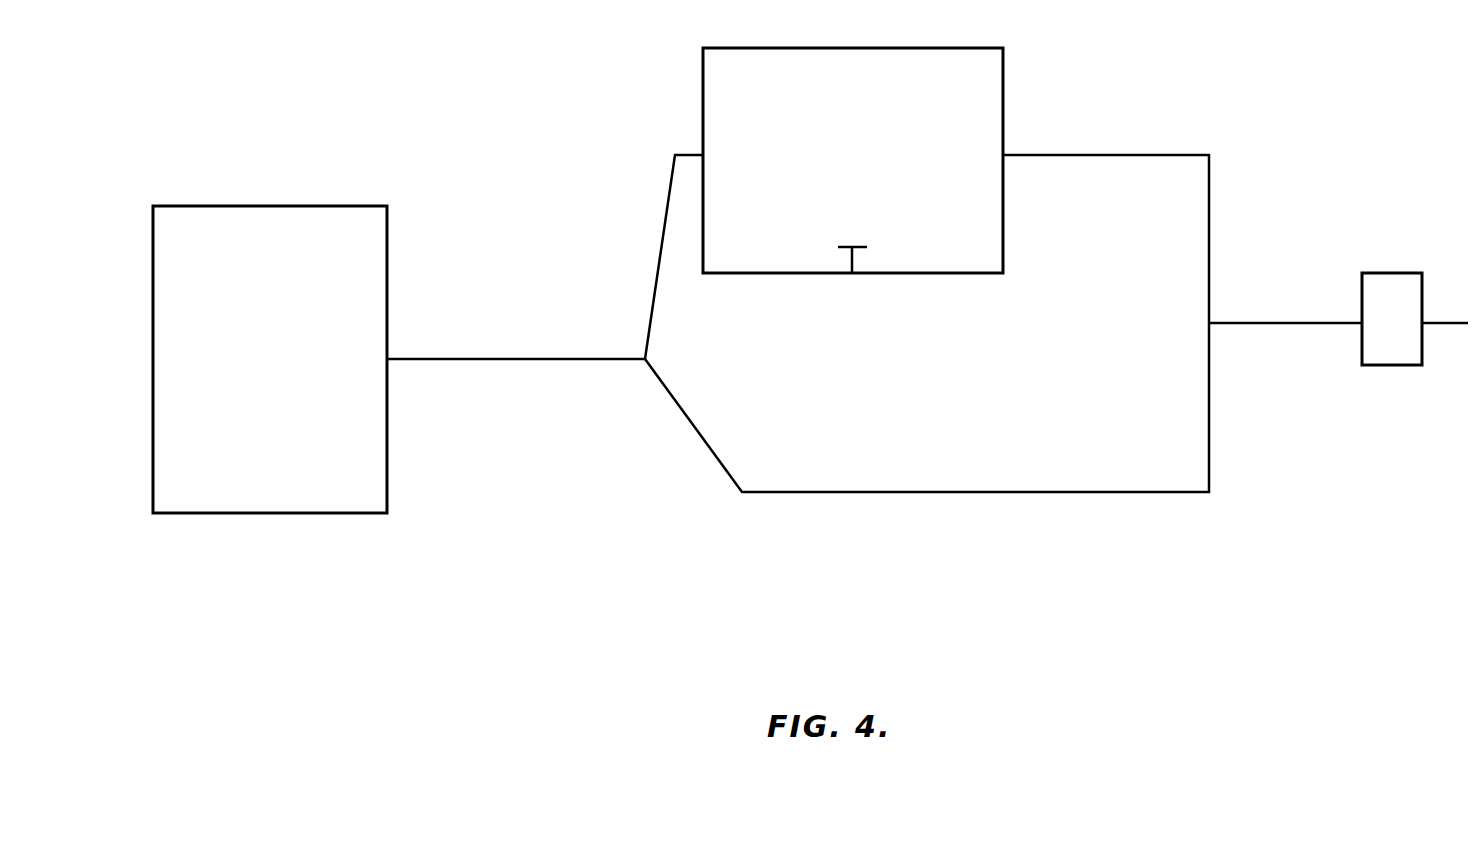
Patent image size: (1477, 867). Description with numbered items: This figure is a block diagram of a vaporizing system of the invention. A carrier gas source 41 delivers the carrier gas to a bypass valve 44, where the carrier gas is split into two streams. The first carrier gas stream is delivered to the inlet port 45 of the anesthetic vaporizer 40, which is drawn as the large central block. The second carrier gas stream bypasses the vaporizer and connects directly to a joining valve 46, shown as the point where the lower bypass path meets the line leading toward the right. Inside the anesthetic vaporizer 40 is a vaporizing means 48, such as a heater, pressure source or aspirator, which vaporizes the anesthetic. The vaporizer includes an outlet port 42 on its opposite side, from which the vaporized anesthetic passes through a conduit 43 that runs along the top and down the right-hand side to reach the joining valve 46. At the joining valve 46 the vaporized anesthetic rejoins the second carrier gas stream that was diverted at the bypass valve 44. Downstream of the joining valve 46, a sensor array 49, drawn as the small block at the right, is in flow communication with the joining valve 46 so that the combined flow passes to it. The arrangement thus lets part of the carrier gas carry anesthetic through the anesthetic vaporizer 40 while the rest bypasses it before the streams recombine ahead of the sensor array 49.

The anesthetic vaporizer 40 is at (853, 160).
The carrier gas source 41 is at (248, 488).
The outlet port 42 is at (1005, 153).
The conduit 43 is at (1181, 157).
The bypass valve 44 is at (644, 362).
The inlet port 45 is at (703, 152).
The joining valve 46 is at (1211, 325).
The vaporizing means 48 is at (843, 258).
The sensor array 49 is at (1424, 352).